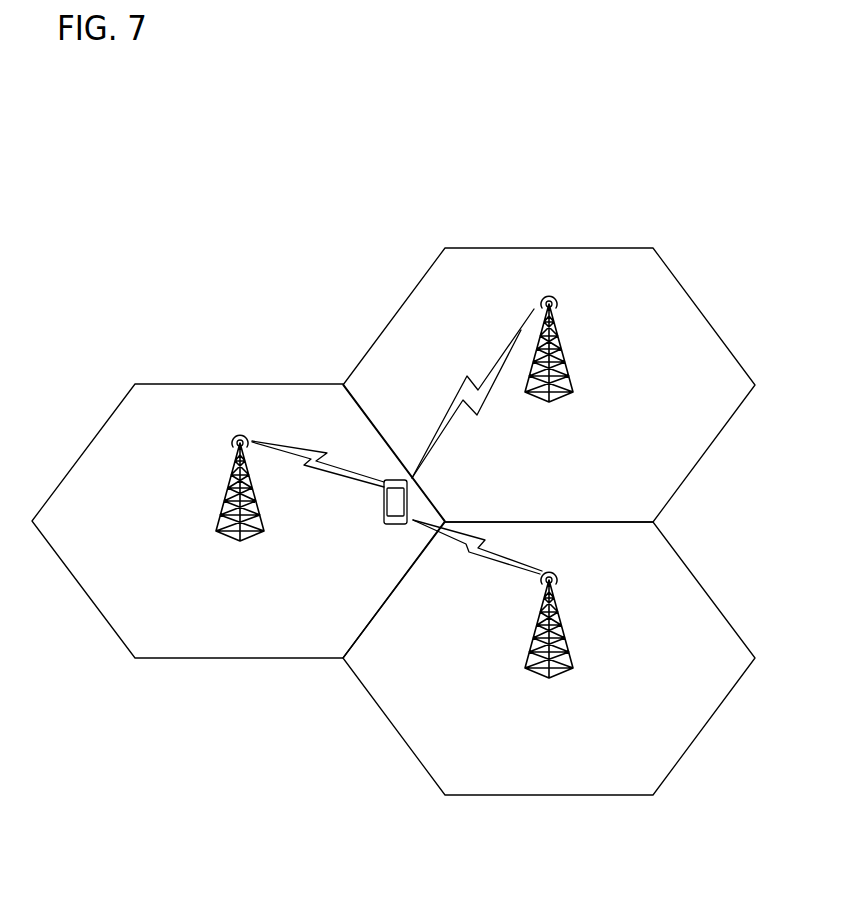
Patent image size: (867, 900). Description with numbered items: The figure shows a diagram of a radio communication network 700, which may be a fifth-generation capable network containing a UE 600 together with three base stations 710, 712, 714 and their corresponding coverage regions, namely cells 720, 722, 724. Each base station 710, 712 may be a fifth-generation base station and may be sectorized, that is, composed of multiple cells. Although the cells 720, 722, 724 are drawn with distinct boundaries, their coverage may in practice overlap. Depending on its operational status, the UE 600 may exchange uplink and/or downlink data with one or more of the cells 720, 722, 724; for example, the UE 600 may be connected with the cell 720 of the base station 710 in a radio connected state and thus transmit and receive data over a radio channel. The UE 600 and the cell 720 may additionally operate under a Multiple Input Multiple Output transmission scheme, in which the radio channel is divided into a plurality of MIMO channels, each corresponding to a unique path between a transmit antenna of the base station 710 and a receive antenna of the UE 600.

The radio communication network 700 is at (393, 494).
The base station 710 is at (240, 498).
The base station 712 is at (549, 364).
The base station 714 is at (549, 640).
The cell 720 is at (97, 432).
The cell 722 is at (475, 253).
The cell 724 is at (378, 712).
The UE 600 is at (395, 515).